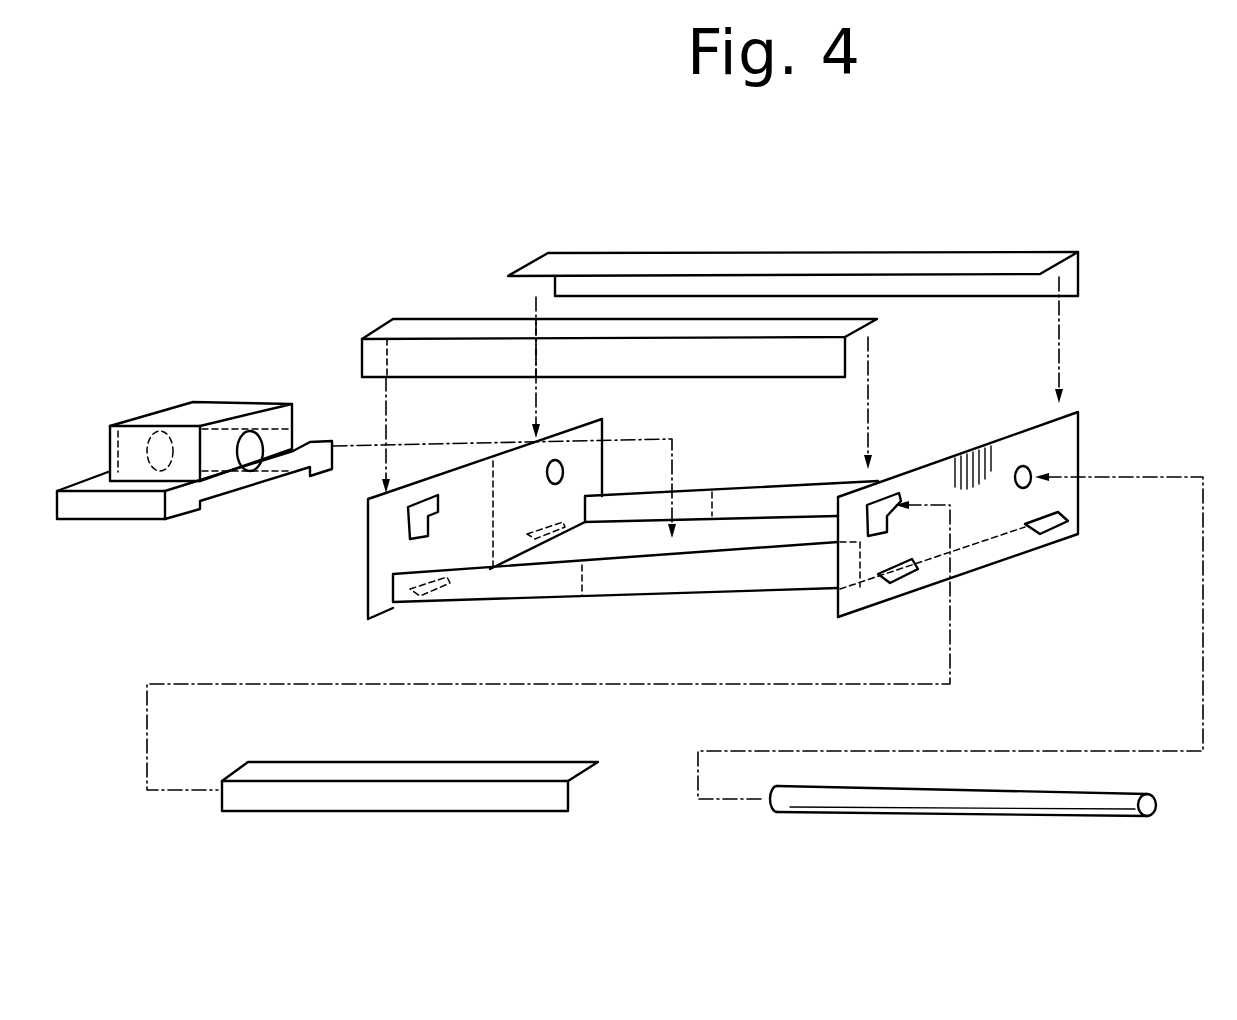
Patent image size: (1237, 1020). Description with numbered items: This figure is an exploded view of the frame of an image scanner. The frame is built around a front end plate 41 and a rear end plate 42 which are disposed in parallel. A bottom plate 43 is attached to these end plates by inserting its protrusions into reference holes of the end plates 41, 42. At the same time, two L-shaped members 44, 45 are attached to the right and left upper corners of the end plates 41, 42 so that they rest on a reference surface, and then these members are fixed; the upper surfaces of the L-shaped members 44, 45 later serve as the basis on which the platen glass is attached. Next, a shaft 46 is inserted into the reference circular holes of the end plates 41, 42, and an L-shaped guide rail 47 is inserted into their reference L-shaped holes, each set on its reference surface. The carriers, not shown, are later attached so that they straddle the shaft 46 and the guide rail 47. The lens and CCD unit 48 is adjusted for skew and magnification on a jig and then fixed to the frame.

The front end plate 41 is at (368, 594).
The rear end plate 42 is at (990, 565).
The bottom plate 43 is at (729, 595).
The L-shaped member 44 is at (750, 365).
The L-shaped member 45 is at (857, 258).
The shaft 46 is at (942, 817).
The L-shaped guide rail 47 is at (378, 812).
The lens and CCD unit 48 is at (168, 418).